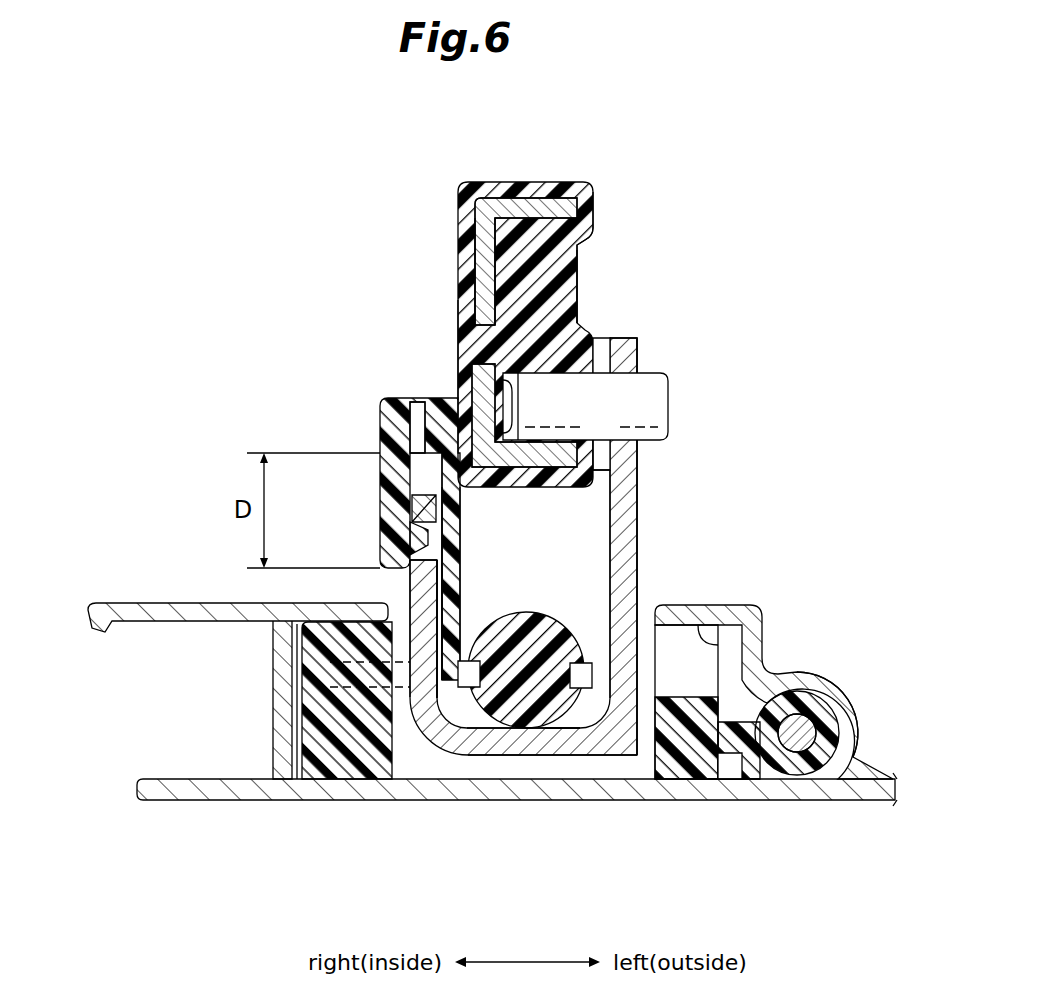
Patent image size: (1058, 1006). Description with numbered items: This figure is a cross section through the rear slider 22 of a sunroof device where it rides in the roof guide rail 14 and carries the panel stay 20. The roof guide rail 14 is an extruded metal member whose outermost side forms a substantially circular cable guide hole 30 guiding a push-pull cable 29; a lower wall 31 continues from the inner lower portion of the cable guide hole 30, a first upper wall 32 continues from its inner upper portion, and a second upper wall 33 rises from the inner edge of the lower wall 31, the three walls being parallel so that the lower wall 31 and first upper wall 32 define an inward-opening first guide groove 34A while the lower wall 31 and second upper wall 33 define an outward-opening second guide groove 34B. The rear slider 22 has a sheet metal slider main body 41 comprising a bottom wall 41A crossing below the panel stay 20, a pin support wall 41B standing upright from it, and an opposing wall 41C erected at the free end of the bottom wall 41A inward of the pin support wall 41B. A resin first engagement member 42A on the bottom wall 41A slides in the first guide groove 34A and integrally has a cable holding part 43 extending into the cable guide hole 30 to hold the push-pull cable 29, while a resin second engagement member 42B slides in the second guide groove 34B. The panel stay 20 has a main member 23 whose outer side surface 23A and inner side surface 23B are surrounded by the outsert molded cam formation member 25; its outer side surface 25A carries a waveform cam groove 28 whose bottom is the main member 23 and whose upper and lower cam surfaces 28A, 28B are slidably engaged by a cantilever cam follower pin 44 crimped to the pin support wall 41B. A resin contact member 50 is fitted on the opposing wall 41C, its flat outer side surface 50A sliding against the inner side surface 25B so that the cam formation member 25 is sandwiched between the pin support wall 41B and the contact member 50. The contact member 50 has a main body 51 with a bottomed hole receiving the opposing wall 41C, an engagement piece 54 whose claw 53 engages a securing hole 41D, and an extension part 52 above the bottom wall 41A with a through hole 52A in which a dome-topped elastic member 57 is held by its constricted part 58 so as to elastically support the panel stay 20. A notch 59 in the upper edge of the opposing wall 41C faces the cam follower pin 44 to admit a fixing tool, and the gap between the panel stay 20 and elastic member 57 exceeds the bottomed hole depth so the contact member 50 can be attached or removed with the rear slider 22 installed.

The roof guide rail 14 is at (283, 803).
The panel stay 20 is at (586, 164).
The rear slider 22 is at (643, 519).
The main member 23 is at (480, 250).
The outer side surface 23A is at (497, 297).
The inner side surface 23B is at (473, 287).
The cam formation member 25 is at (578, 250).
The outer side surface 25A is at (578, 282).
The inner side surface 25B is at (458, 343).
The cam groove 28 is at (505, 378).
The cam surface 28A is at (608, 388).
The cam surface 28B is at (605, 430).
The push-pull cable 29 is at (803, 705).
The cable guide hole 30 is at (833, 715).
The lower wall 31 is at (728, 781).
The first upper wall 32 is at (708, 607).
The second upper wall 33 is at (318, 607).
The first guide groove 34A is at (718, 645).
The second guide groove 34B is at (293, 640).
The slider main body 41 is at (443, 735).
The bottom wall 41A is at (535, 743).
The pin support wall 41B is at (625, 557).
The opposing wall 41C is at (425, 597).
The securing hole 41D is at (443, 545).
The first engagement member 42A is at (690, 768).
The second engagement member 42B is at (350, 762).
The cable holding part 43 is at (787, 762).
The cam follower pin 44 is at (650, 398).
The contact member 50 is at (383, 418).
The outer side surface 50A is at (462, 503).
The main body 51 is at (462, 595).
The extension part 52 is at (582, 660).
The through hole 52A is at (477, 722).
The claw 53 is at (415, 528).
The engagement piece 54 is at (390, 502).
The elastic member 57 is at (535, 612).
The constricted part 58 is at (556, 722).
The notch 59 is at (420, 495).